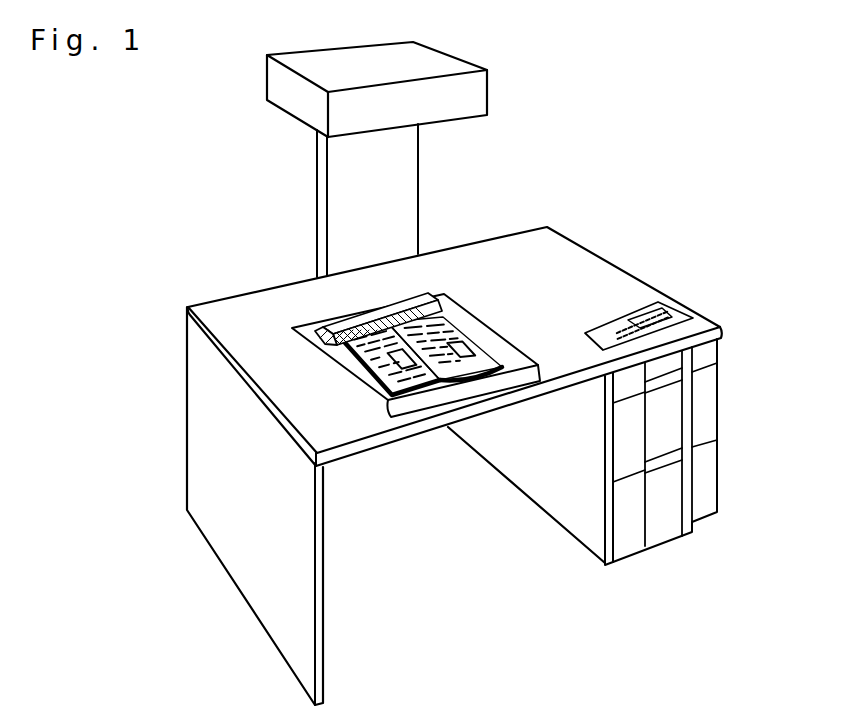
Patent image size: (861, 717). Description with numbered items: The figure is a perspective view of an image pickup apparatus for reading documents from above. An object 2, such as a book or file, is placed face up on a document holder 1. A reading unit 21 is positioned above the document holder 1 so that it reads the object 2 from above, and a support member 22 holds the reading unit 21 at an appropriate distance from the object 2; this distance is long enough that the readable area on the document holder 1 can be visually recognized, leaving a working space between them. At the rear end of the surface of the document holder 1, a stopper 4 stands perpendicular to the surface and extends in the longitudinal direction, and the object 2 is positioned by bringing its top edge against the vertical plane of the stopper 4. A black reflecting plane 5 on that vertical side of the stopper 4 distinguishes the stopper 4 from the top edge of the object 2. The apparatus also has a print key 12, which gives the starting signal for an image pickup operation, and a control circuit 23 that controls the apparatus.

The document holder 1 is at (595, 253).
The object 2 is at (390, 402).
The stopper 4 is at (410, 303).
The black reflecting plane 5 is at (334, 334).
The print key 12 is at (673, 310).
The reading unit 21 is at (468, 63).
The support member 22 is at (413, 195).
The control circuit 23 is at (720, 352).